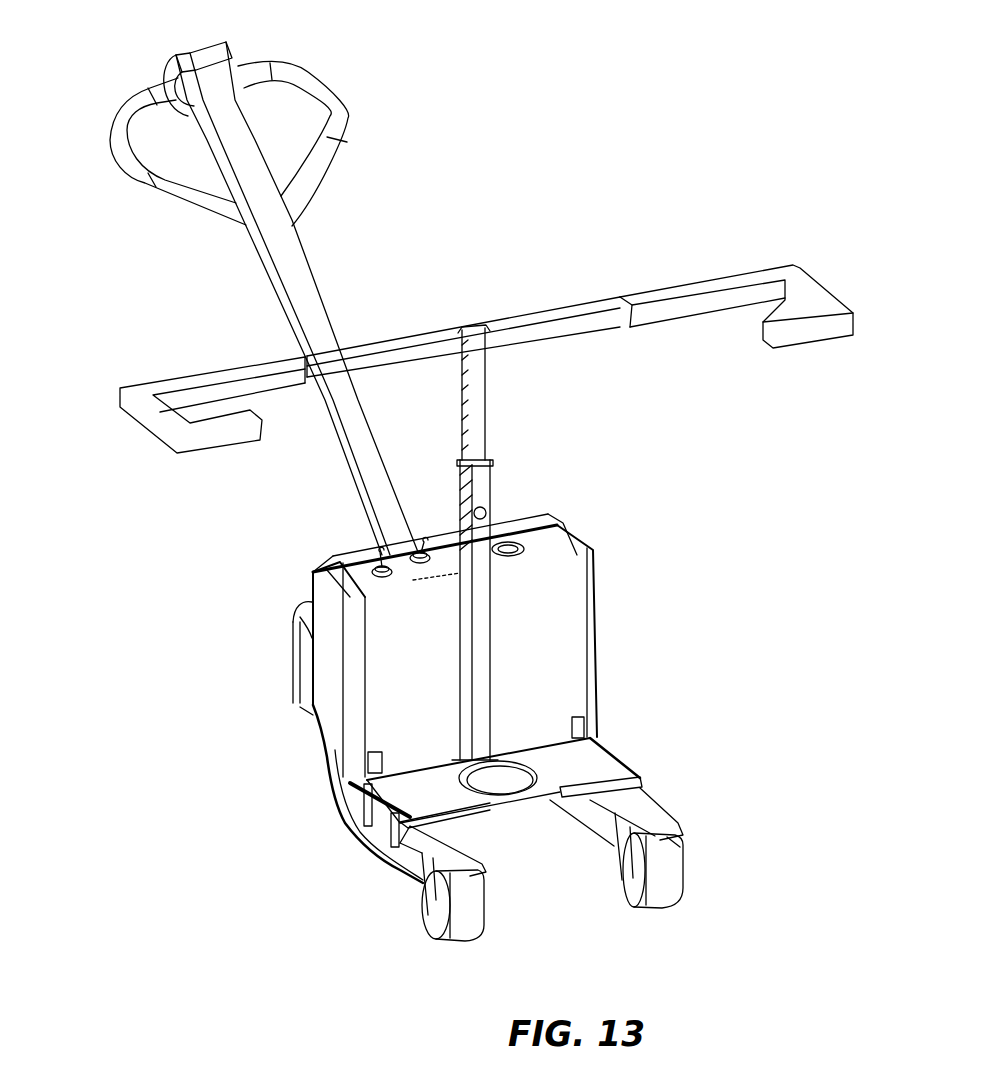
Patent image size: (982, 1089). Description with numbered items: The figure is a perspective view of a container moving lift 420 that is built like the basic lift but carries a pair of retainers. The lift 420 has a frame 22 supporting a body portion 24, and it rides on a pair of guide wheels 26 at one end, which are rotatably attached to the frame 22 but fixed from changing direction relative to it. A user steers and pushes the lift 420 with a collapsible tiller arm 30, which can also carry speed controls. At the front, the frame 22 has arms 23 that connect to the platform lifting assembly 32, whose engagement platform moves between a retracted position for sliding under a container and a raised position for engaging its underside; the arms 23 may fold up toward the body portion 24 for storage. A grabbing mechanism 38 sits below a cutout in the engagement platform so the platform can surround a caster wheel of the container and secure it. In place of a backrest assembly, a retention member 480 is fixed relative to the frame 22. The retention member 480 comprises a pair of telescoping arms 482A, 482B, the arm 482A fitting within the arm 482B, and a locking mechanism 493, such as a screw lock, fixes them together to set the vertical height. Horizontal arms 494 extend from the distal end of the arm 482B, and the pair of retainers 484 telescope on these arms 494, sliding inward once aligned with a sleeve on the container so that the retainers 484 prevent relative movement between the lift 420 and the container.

The frame 22 is at (325, 784).
The arm 23 is at (373, 852).
The body portion 24 is at (302, 663).
The guide wheels 26 is at (442, 940).
The collapsible tiller arm 30 is at (282, 283).
The platform lifting assembly 32 is at (636, 745).
The grabbing mechanism 38 is at (523, 816).
The lift 420 is at (459, 478).
The retention member 480 is at (459, 328).
The telescoping arm 482A is at (540, 610).
The telescoping arm 482B is at (477, 407).
The retainers 484 is at (142, 385).
The locking mechanism 493 is at (488, 518).
The arms 494 is at (543, 315).